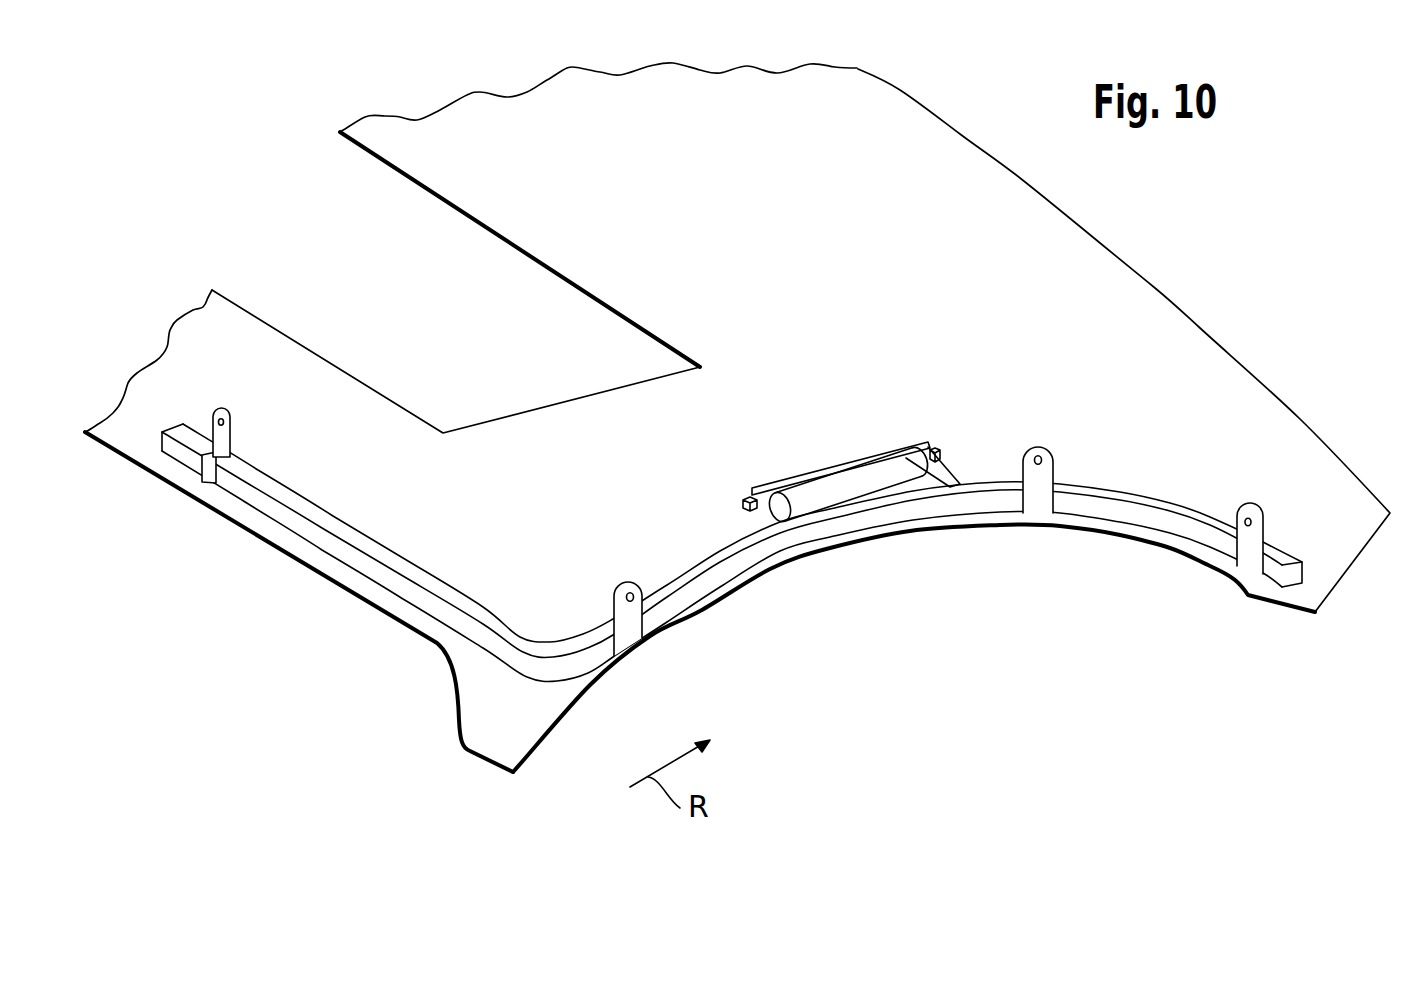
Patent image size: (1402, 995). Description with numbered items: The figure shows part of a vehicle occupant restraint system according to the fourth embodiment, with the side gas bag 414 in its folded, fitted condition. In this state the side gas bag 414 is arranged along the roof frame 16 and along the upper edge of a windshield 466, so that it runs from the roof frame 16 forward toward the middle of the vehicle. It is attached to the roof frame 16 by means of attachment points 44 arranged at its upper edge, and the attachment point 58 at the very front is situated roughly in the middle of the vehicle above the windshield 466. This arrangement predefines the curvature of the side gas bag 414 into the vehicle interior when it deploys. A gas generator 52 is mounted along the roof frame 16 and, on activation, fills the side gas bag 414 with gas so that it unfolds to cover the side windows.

The roof frame 16 is at (953, 522).
The attachment points 44 is at (622, 598).
The gas generator 52 is at (822, 490).
The attachment point 58 is at (220, 432).
The side gas bag 414 is at (778, 540).
The windshield 466 is at (183, 579).